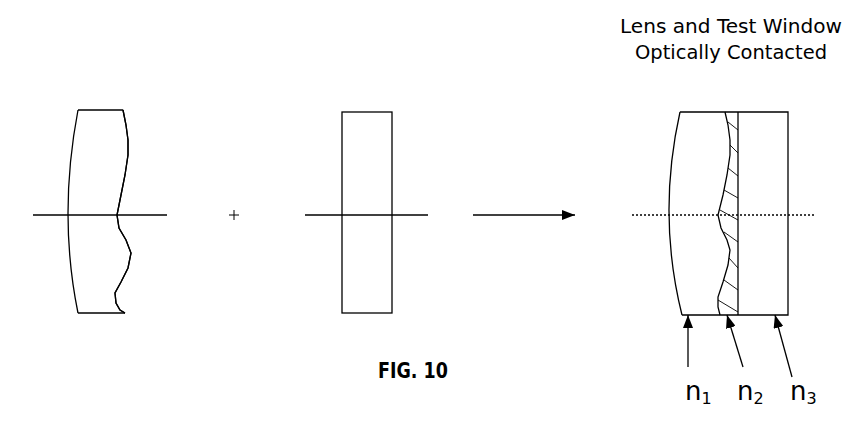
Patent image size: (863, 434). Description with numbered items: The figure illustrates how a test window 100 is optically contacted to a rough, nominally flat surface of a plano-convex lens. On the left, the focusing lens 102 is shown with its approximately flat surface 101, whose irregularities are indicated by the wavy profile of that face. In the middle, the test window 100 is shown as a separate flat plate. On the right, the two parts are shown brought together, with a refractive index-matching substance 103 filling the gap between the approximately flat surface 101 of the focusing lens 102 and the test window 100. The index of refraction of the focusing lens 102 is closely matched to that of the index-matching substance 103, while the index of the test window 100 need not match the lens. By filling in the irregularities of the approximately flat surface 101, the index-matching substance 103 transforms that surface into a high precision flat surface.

The test window 100 is at (415, 72).
The approximately flat surface 101 is at (132, 153).
The focusing lens 102 is at (90, 105).
The refractive index-matching substance 103 is at (723, 183).